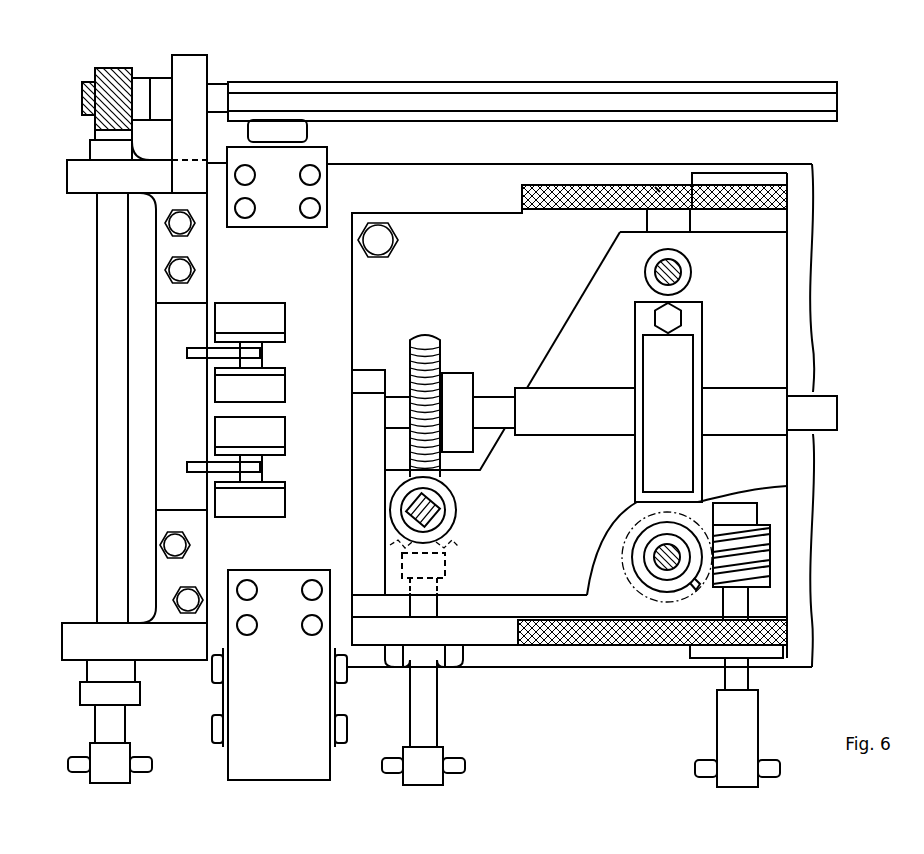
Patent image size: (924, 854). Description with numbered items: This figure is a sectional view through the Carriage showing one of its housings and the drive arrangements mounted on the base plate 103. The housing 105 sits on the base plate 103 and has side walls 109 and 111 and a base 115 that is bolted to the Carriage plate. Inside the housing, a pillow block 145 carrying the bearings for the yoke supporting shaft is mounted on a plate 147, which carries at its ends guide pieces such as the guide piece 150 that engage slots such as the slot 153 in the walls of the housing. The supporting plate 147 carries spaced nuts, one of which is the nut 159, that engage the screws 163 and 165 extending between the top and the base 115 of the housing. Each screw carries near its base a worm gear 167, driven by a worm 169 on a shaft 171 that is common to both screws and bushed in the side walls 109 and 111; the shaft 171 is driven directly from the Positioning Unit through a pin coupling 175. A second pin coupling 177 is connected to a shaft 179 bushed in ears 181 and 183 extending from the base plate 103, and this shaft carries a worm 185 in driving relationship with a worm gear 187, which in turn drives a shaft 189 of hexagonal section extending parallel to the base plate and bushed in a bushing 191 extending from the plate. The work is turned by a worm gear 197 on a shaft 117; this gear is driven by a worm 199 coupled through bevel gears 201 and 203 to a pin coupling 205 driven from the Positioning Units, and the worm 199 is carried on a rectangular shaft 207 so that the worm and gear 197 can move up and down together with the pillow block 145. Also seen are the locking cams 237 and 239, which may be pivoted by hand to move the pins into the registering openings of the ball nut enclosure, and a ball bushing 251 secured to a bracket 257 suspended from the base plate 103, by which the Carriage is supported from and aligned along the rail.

The base plate 103 is at (290, 268).
The housing 105 is at (833, 233).
The side wall 109 is at (496, 636).
The side wall 111 is at (522, 198).
The base 115 is at (778, 274).
The shaft 117 is at (831, 397).
The pillow block 145 is at (685, 376).
The plate 147 is at (688, 221).
The guide piece 150 is at (661, 187).
The slot 153 is at (657, 186).
The nut 159 is at (682, 598).
The screw 163 is at (650, 558).
The screw 165 is at (681, 268).
The worm gear 167 is at (643, 580).
The worm 169 is at (720, 530).
The shaft 171 is at (752, 604).
The pin coupling 175 is at (776, 764).
The pin coupling 177 is at (80, 758).
The shaft 179 is at (122, 727).
The ear 181 is at (86, 622).
The ear 183 is at (76, 162).
The worm 185 is at (85, 82).
The worm gear 187 is at (113, 68).
The shaft 189 is at (397, 82).
The bushing 191 is at (203, 68).
The worm gear 197 is at (432, 346).
The worm 199 is at (448, 489).
The bevel gear 201 is at (452, 518).
The bevel gear 203 is at (458, 537).
The pin coupling 205 is at (463, 760).
The rectangular shaft 207 is at (433, 503).
The locking cam 237 is at (213, 350).
The locking cam 239 is at (213, 472).
The ball bushing 251 is at (240, 745).
The bracket 257 is at (286, 570).